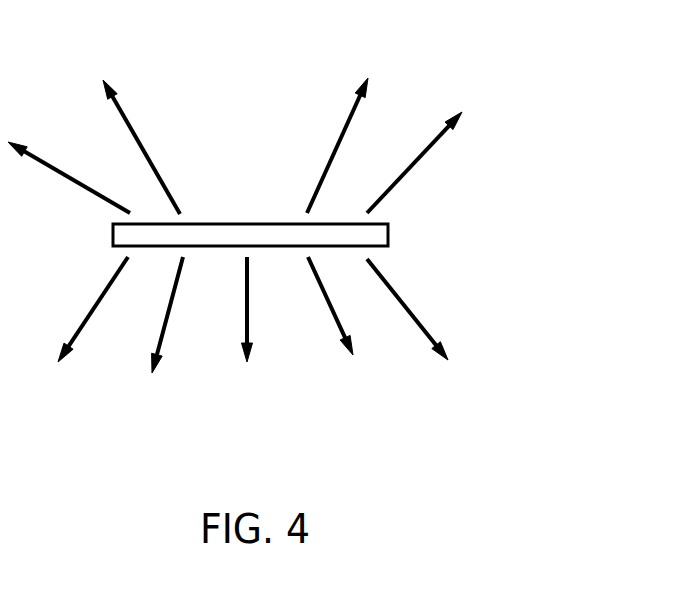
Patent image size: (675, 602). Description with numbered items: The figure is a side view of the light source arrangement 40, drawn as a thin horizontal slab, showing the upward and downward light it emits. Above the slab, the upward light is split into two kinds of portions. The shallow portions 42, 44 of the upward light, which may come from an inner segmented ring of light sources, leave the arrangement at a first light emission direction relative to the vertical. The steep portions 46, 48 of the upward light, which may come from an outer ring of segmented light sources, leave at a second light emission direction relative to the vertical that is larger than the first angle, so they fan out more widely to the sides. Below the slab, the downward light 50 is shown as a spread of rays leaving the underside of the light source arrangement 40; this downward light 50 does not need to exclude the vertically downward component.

The light source arrangement 40 is at (235, 213).
The shallow portion of upward light 42 is at (128, 122).
The shallow portion of upward light 44 is at (344, 128).
The steep portion of upward light 46 is at (55, 166).
The steep portion of upward light 48 is at (428, 145).
The downward light 50 is at (427, 278).